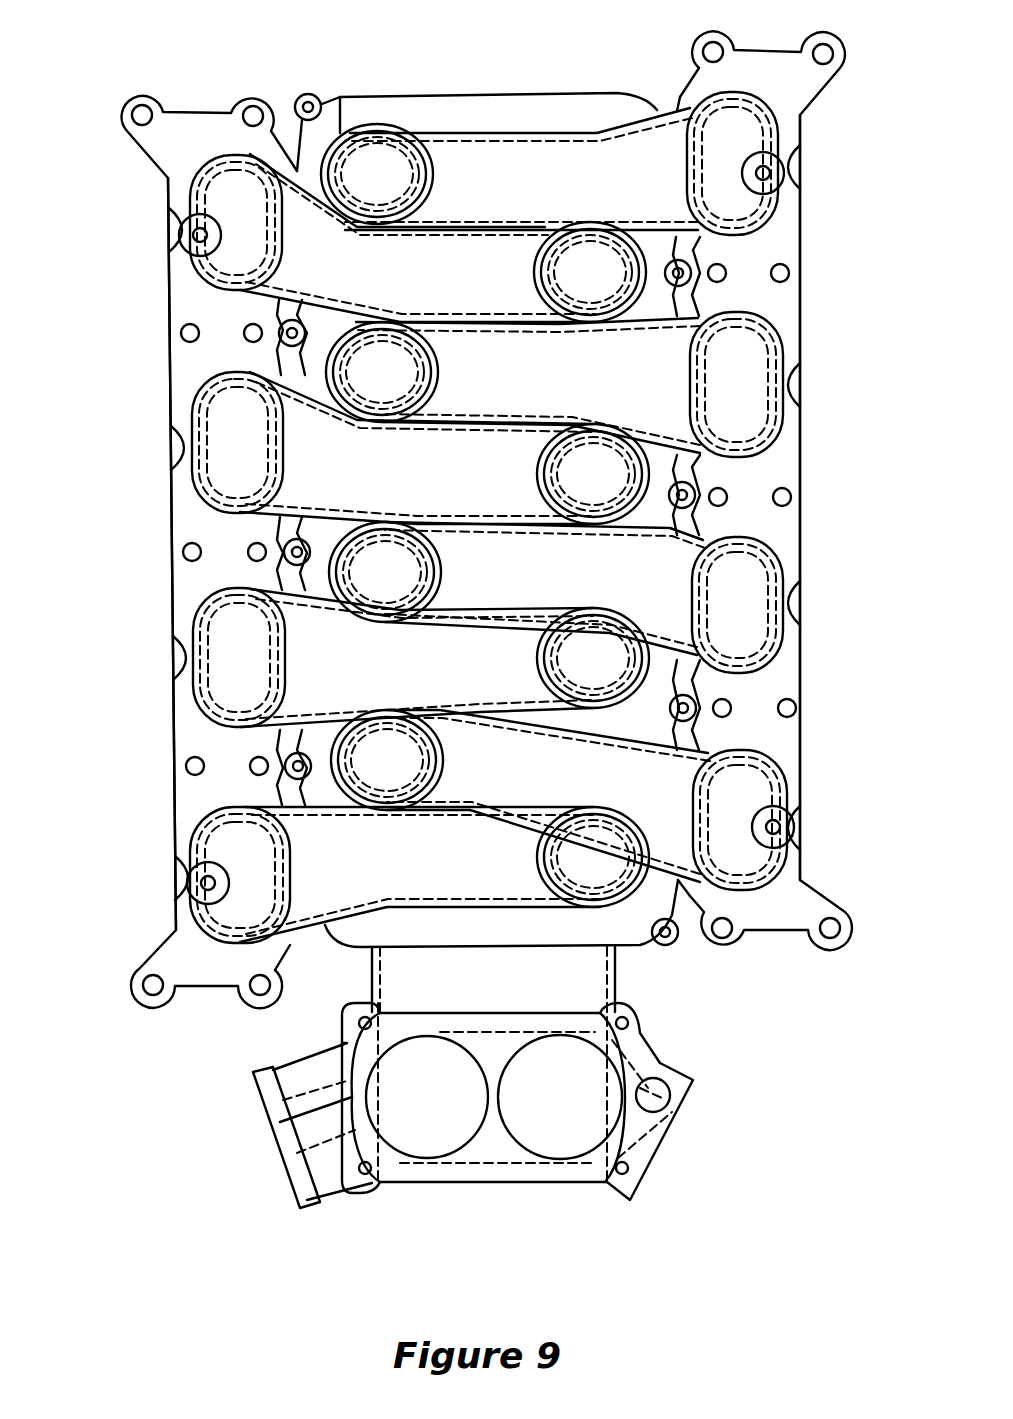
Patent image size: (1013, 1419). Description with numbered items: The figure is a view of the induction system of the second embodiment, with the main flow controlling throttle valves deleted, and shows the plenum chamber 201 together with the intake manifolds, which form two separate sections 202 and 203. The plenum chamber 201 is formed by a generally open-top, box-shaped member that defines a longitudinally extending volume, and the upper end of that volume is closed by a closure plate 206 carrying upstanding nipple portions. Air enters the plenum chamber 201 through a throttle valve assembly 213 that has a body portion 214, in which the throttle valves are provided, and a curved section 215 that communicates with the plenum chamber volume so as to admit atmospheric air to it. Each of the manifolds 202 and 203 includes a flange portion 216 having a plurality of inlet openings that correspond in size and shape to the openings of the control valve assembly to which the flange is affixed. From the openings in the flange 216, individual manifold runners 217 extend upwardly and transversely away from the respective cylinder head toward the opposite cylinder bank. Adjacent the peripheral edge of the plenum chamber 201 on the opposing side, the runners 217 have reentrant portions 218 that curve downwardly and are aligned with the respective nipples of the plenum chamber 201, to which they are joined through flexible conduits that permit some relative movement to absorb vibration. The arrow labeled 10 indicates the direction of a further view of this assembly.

The section view direction indicator 10 is at (718, 1013).
The plenum chamber 201 is at (473, 477).
The intake manifold 202 is at (135, 410).
The intake manifold 203 is at (832, 374).
The closure plate 206 is at (573, 100).
The throttle valve assembly 213 is at (694, 1052).
The body portion 214 is at (523, 1178).
The curved section 215 is at (620, 970).
The flange portion 216 is at (803, 458).
The manifold runners 217 is at (748, 133).
The reentrant portions 218 is at (340, 97).